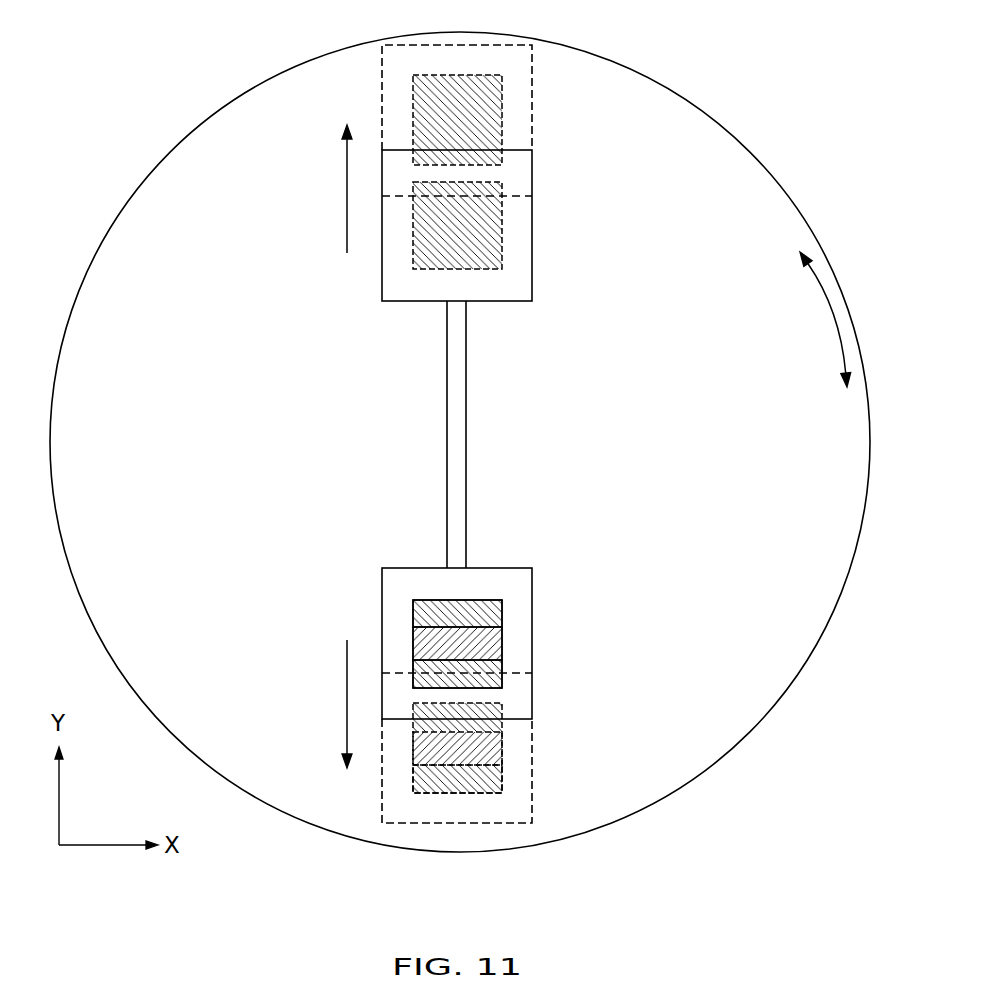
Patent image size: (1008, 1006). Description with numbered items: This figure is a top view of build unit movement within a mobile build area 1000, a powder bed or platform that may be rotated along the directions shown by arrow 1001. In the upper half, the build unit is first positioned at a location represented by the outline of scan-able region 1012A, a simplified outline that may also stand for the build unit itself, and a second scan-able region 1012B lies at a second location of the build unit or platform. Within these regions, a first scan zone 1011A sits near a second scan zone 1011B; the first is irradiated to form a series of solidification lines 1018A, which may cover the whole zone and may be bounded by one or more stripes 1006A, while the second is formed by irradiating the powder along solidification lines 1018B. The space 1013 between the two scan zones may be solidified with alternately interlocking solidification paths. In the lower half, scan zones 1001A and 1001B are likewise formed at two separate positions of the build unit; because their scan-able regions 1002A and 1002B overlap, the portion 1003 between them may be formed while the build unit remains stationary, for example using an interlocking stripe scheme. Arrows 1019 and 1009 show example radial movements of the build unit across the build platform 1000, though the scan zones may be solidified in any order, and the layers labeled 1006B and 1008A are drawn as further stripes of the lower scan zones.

The mobile build area 1000 is at (293, 780).
The arrow 1001 is at (833, 317).
The first scan zone 1001A is at (502, 645).
The second scan zone 1001B is at (502, 748).
The scan-able region 1002A is at (382, 600).
The scan-able region 1002B is at (533, 785).
The portion (space between scan regions) 1003 is at (504, 704).
The stripes 1006A is at (433, 623).
The upper layer (shifted position) 1006B is at (480, 767).
The lower layer 1008A is at (495, 615).
The arrow 1009 is at (344, 677).
The first scan zone 1011A is at (422, 272).
The second scan zone 1011B is at (503, 95).
The scan-able region 1012A is at (533, 277).
The scan-able region 1012B is at (533, 118).
The region (space between scan regions) 1013 is at (504, 183).
The solidification lines 1018A is at (495, 228).
The solidification lines 1018B is at (423, 117).
The arrow 1019 is at (344, 215).